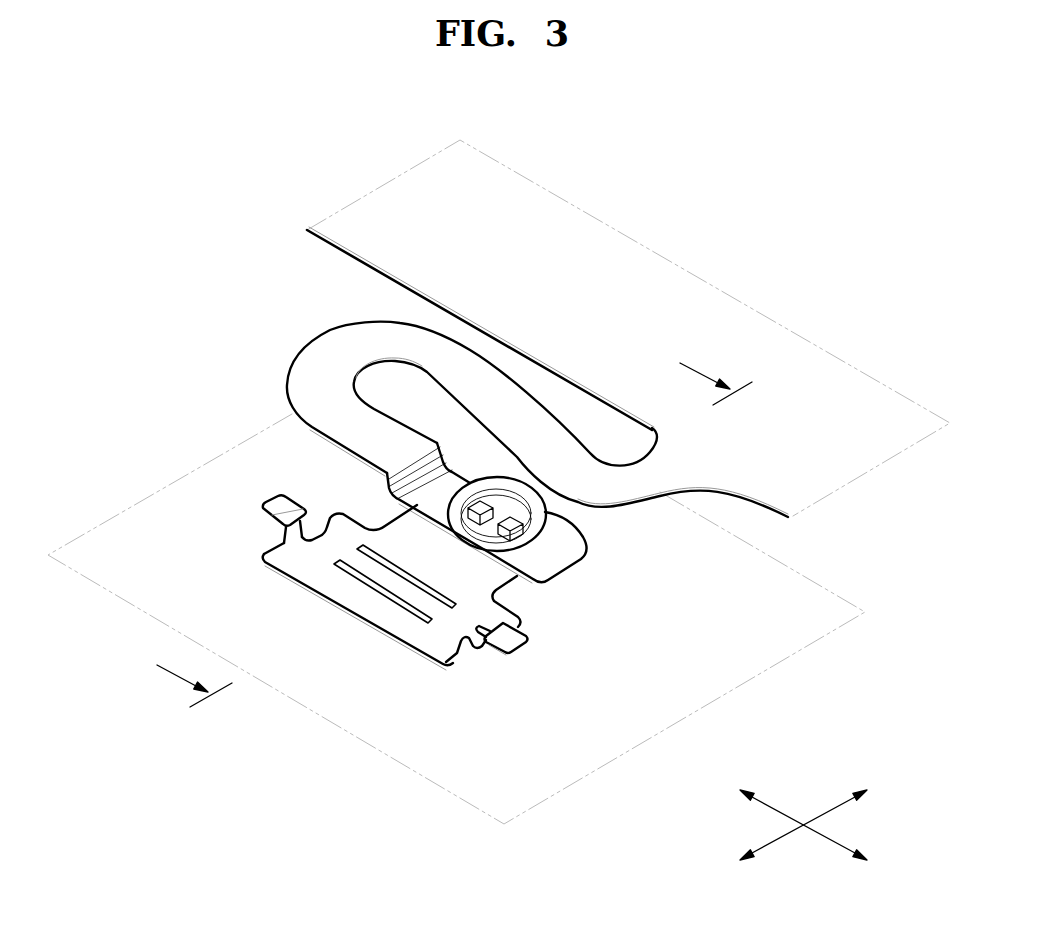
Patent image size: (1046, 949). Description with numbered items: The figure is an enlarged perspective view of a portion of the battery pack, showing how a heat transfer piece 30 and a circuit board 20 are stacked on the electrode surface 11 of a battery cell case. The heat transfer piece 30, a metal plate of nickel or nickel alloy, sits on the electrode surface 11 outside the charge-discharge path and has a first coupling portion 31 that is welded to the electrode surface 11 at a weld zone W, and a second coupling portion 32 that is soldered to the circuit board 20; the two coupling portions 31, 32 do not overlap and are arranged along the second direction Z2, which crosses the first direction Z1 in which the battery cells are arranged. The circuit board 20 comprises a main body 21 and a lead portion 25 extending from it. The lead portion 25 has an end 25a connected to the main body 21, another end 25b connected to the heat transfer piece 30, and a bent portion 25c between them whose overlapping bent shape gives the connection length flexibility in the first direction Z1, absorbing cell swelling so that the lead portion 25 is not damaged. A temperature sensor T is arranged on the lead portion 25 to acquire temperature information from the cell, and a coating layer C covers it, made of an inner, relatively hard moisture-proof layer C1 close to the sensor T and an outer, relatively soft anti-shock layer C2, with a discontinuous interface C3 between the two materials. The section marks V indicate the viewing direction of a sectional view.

The electrode surface 11 is at (410, 763).
The circuit board 20 is at (270, 147).
The main body 21 is at (377, 205).
The lead portion 25 is at (488, 413).
The end 25a is at (707, 460).
The other end 25b is at (562, 560).
The bent portion 25c is at (397, 338).
The temperature sensor T is at (467, 497).
The coating layer C is at (548, 293).
The moisture-proof layer C1 is at (503, 493).
The anti-shock layer C2 is at (530, 497).
The discontinuous interface C3 is at (527, 512).
The heat transfer piece 30 is at (626, 678).
The first coupling portion 31 is at (404, 618).
The second coupling portion 32 is at (517, 576).
The weld zone W is at (387, 593).
The section view indicator V is at (444, 524).
The first direction Z1 is at (821, 836).
The second direction Z2 is at (821, 817).